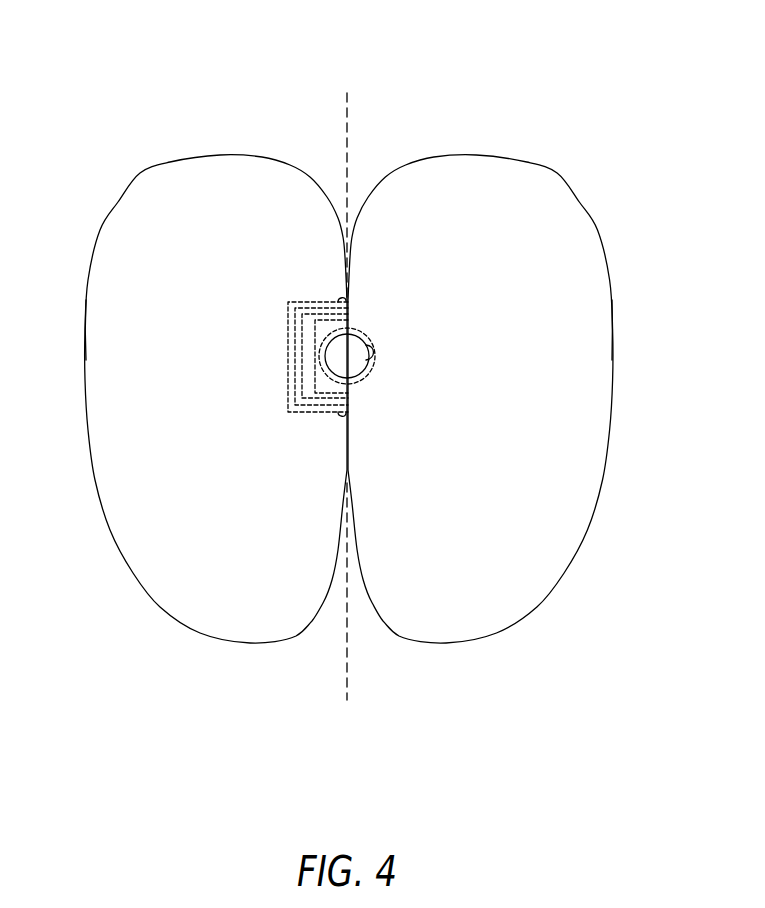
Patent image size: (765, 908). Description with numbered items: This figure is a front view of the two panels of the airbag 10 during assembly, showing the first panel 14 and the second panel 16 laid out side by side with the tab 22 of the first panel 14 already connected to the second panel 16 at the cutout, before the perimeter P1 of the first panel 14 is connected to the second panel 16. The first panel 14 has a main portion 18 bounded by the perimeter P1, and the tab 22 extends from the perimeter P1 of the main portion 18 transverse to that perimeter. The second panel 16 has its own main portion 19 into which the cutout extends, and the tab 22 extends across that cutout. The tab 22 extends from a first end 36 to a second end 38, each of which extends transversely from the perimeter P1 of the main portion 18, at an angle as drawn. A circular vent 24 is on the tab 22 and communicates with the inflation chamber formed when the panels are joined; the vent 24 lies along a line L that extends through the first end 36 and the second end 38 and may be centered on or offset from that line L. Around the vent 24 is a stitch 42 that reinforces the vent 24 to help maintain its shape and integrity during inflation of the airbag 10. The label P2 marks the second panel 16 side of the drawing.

The airbag 10 is at (589, 75).
The first panel 14 is at (588, 448).
The second panel 16 is at (108, 447).
The main portion 18 is at (592, 355).
The main portion 19 is at (110, 349).
The tab 22 is at (318, 327).
The vent 24 is at (362, 345).
The first end 36 is at (348, 308).
The second end 38 is at (350, 404).
The stitch 42 is at (375, 358).
The perimeter P1 is at (516, 399).
The second portion P2 is at (182, 399).
The line L is at (352, 113).